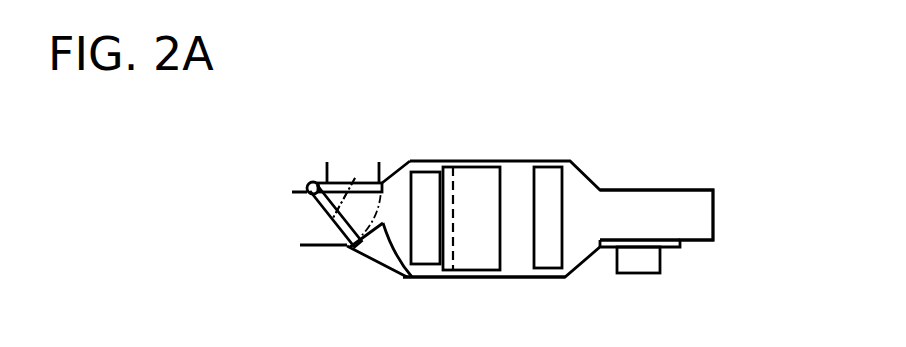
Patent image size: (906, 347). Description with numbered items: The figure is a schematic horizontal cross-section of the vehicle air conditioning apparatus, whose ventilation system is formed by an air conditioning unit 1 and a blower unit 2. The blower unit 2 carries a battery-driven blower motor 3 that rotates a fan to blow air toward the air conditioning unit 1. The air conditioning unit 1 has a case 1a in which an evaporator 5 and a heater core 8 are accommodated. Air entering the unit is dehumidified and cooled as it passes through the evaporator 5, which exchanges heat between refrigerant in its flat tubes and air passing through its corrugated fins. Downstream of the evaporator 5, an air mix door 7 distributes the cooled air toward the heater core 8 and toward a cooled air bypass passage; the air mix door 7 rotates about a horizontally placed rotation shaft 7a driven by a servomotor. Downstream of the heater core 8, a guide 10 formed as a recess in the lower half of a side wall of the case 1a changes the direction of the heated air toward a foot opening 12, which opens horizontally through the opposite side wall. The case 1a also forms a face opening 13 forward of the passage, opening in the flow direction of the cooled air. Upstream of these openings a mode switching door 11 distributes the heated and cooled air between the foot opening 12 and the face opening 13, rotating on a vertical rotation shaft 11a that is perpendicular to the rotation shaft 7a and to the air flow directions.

The air conditioning unit 1 is at (493, 286).
The case 1a is at (516, 278).
The blower unit 2 is at (666, 183).
The blower motor 3 is at (661, 260).
The evaporator 5 is at (550, 175).
The air mix door 7 is at (488, 177).
The rotation shaft 7a is at (449, 180).
The heater core 8 is at (421, 180).
The guide 10 is at (380, 253).
The mode switching door 11 is at (333, 218).
The rotation shaft 11a is at (313, 181).
The foot opening 12 is at (350, 170).
The face opening 13 is at (305, 222).